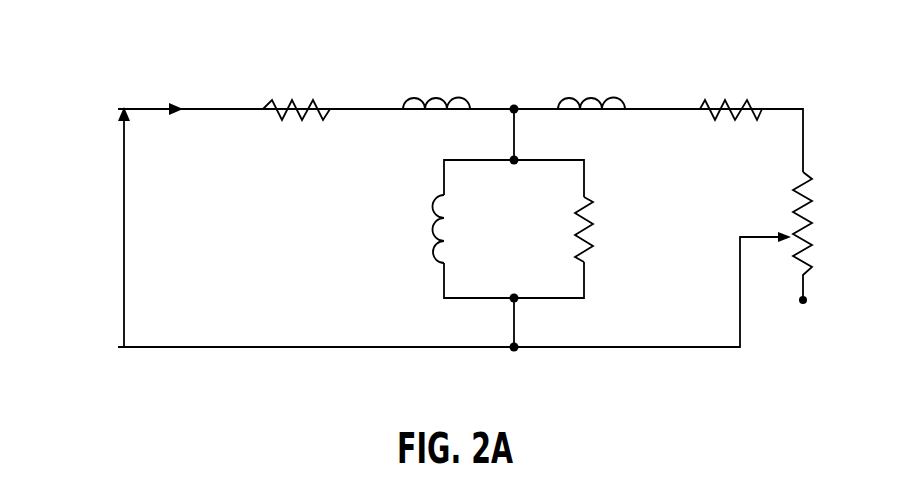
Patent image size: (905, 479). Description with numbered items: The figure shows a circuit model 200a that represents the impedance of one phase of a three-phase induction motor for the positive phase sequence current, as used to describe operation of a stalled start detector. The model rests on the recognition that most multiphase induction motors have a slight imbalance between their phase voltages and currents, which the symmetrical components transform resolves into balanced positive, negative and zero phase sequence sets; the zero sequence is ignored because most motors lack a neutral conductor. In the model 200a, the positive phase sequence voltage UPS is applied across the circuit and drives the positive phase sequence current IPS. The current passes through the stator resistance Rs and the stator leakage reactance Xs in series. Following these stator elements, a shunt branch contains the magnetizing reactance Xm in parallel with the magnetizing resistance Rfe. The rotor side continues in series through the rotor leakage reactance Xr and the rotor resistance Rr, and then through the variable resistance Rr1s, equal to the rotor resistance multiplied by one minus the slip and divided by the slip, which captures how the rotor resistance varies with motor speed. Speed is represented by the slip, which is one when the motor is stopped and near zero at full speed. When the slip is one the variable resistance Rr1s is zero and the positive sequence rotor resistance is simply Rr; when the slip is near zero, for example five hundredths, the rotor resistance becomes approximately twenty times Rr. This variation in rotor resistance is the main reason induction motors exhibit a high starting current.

The circuit model 200a is at (130, 54).
The positive phase sequence current IPS is at (178, 88).
The positive phase sequence voltage UPS is at (102, 177).
The stator resistance Rs is at (296, 90).
The stator leakage reactance Xs is at (436, 85).
The rotor leakage reactance Xr is at (591, 85).
The rotor resistance Rr is at (731, 90).
The variable resistance Rr1s is at (754, 238).
The magnetizing reactance Xm is at (419, 229).
The magnetizing resistance Rfe is at (563, 229).